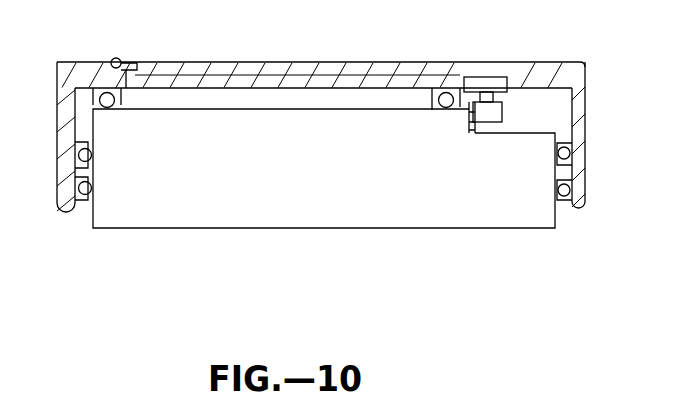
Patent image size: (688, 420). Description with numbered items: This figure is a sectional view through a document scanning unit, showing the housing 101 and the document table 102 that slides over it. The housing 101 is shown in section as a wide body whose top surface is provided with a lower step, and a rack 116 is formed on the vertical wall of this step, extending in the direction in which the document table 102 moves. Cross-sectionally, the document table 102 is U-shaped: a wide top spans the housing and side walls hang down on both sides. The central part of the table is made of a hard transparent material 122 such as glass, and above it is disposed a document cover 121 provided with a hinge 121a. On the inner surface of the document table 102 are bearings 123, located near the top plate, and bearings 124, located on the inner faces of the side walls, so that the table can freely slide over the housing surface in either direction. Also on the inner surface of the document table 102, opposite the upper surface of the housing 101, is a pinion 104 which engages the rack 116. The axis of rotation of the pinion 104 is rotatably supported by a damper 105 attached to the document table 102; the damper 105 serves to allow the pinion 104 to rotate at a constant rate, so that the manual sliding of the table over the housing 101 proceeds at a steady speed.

The housing 101 is at (462, 220).
The document table 102 is at (585, 62).
The pinion 104 is at (497, 115).
The damper 105 is at (493, 83).
The rack 116 is at (475, 135).
The document cover 121 is at (375, 67).
The hinge 121a is at (114, 58).
The hard transparent material 122 is at (310, 72).
The bearing 123 is at (108, 110).
The bearing 124 is at (92, 160).